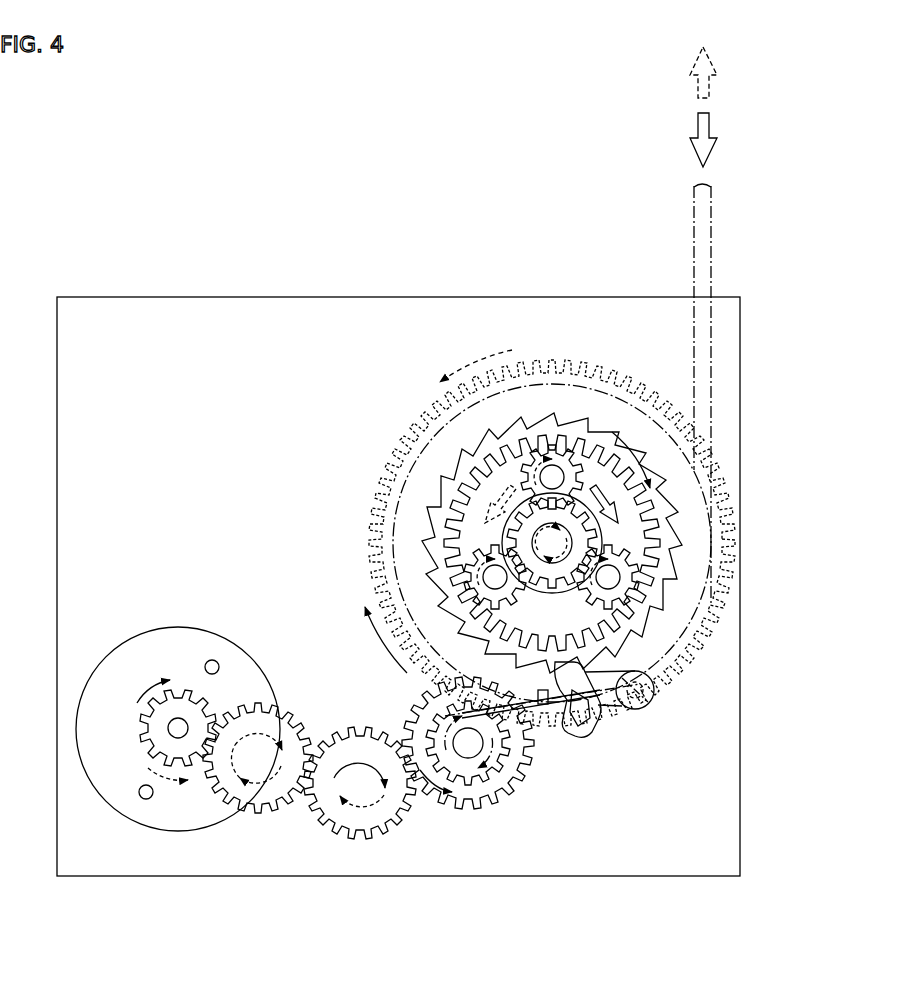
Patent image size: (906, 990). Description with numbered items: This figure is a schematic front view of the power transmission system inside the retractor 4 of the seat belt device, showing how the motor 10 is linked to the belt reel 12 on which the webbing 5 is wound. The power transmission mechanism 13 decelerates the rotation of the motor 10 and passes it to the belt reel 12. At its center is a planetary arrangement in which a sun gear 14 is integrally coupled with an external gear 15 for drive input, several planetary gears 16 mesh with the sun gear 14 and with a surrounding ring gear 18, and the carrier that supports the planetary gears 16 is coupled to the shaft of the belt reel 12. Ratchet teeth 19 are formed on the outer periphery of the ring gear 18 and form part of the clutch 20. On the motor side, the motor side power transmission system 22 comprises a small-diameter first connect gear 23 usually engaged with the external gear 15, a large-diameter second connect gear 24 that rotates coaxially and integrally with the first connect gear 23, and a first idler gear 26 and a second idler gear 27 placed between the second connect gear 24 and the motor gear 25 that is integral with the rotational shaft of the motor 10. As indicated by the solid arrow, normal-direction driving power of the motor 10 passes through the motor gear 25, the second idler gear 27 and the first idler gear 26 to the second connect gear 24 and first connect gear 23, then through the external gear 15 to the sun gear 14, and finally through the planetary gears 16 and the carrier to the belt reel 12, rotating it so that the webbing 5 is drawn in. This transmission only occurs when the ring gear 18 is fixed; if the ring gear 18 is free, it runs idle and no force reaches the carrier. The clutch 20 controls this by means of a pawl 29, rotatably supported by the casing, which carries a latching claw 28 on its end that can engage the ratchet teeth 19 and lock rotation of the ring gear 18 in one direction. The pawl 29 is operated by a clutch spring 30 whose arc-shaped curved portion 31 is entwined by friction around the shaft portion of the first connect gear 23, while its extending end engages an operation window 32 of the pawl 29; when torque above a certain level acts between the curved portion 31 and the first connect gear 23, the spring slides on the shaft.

The retractor 4 is at (172, 297).
The webbing 5 is at (712, 238).
The motor 10 is at (187, 810).
The belt reel 12 is at (722, 588).
The power transmission mechanism 13 is at (662, 477).
The sun gear 14 is at (507, 533).
The external gear 15 is at (423, 417).
The planetary gears 16 is at (567, 453).
The ring gear 18 is at (667, 518).
The ratchet teeth 19 is at (655, 668).
The clutch 20 is at (617, 727).
The motor side power transmission system 22 is at (298, 822).
The first connect gear 23 is at (462, 803).
The second connect gear 24 is at (428, 800).
The motor gear 25 is at (193, 707).
The first idler gear 26 is at (362, 837).
The second idler gear 27 is at (265, 810).
The latching claw 28 is at (558, 672).
The pawl 29 is at (633, 715).
The clutch spring 30 is at (542, 704).
The curved portion 31 is at (478, 762).
The operation window 32 is at (598, 720).